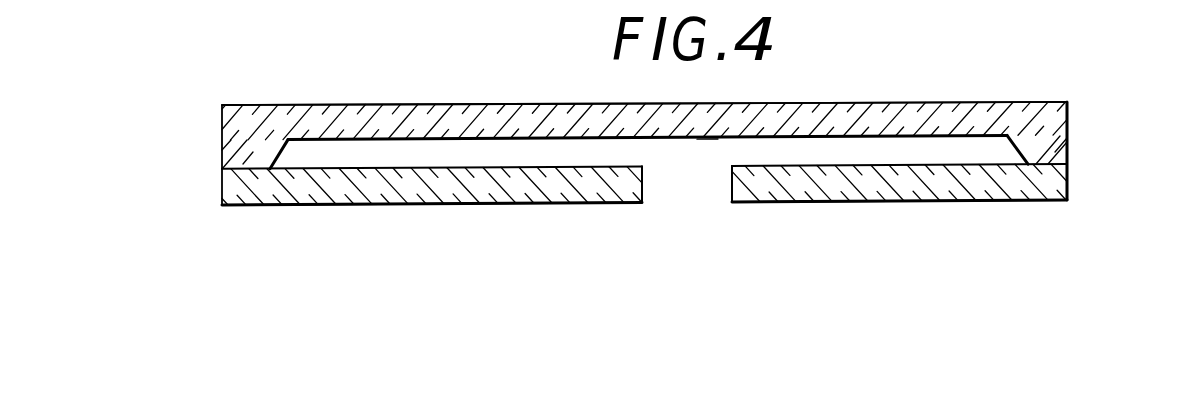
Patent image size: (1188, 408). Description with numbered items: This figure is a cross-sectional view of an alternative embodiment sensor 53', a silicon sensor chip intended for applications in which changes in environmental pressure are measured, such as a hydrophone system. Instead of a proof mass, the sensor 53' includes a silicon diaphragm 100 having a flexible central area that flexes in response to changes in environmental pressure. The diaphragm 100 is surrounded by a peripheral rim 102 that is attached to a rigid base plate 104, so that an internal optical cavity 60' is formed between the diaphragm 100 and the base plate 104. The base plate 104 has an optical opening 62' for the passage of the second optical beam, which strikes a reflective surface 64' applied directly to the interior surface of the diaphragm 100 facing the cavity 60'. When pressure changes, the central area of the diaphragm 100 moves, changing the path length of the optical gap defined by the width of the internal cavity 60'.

The sensor 53' is at (587, 139).
The internal optical cavity 60' is at (644, 111).
The optical opening 62' is at (687, 206).
The reflective surface 64' is at (735, 102).
The silicon diaphragm 100 is at (925, 101).
The peripheral rim 102 is at (1068, 143).
The rigid base plate 104 is at (1025, 190).